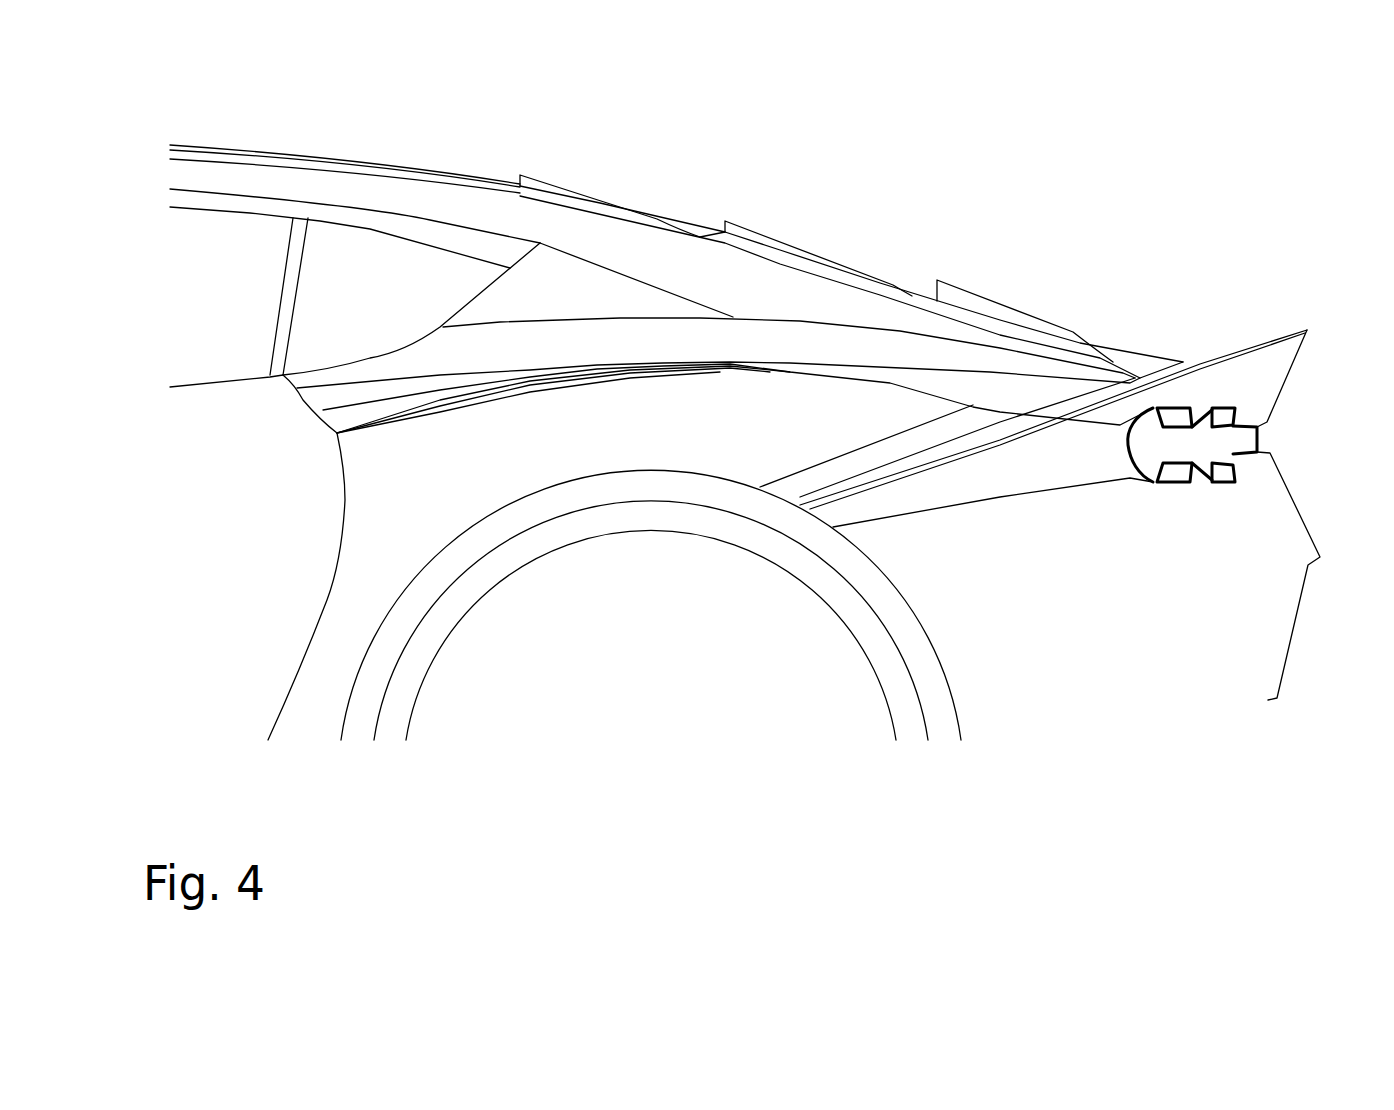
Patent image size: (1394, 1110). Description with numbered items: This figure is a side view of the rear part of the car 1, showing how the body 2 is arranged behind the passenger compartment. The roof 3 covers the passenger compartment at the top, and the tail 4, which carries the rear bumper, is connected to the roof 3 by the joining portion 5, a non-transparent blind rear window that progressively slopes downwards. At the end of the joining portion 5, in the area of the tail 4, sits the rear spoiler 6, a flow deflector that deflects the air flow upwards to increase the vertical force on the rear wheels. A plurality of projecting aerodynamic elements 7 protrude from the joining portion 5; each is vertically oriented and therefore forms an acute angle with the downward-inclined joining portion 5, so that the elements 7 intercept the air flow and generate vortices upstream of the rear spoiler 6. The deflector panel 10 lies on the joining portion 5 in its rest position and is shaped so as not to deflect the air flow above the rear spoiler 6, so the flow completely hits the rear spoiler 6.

The car 1 is at (1284, 869).
The body 2 is at (1033, 63).
The roof 3 is at (212, 145).
The tail 4 is at (1280, 547).
The joining portion 5 is at (917, 298).
The rear spoiler 6 is at (1255, 373).
The projecting aerodynamic elements 7 is at (558, 170).
The deflector panel 10 is at (703, 228).